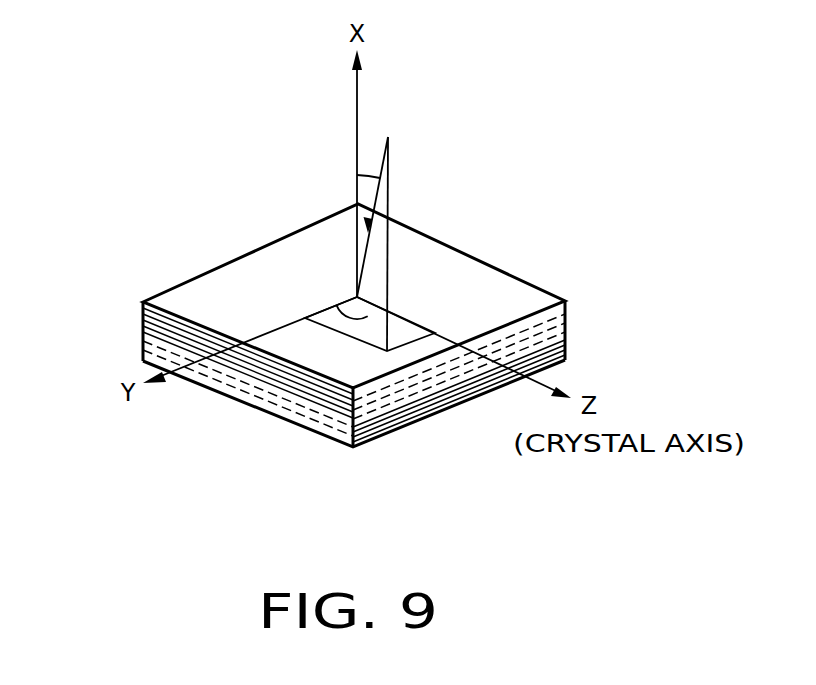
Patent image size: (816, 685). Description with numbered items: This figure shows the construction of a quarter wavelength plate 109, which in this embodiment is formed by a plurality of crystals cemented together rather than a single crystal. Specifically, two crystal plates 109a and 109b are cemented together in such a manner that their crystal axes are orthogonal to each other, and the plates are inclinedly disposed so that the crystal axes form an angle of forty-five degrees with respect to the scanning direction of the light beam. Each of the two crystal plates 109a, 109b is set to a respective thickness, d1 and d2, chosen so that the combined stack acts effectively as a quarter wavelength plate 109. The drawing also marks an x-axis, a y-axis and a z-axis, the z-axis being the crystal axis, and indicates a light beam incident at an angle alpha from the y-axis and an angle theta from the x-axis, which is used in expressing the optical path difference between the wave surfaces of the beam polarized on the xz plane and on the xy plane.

The quarter wavelength plate 109 is at (487, 263).
The crystal plate 109a is at (142, 303).
The crystal plate 109b is at (257, 398).